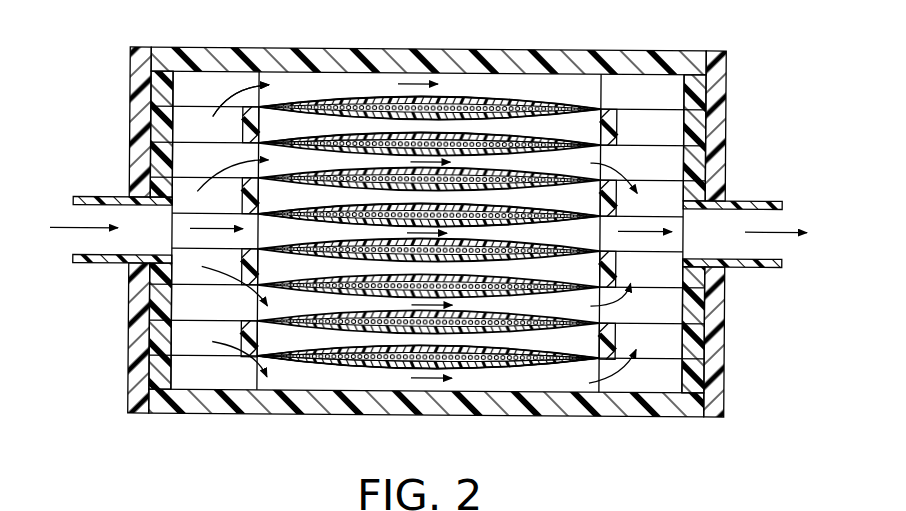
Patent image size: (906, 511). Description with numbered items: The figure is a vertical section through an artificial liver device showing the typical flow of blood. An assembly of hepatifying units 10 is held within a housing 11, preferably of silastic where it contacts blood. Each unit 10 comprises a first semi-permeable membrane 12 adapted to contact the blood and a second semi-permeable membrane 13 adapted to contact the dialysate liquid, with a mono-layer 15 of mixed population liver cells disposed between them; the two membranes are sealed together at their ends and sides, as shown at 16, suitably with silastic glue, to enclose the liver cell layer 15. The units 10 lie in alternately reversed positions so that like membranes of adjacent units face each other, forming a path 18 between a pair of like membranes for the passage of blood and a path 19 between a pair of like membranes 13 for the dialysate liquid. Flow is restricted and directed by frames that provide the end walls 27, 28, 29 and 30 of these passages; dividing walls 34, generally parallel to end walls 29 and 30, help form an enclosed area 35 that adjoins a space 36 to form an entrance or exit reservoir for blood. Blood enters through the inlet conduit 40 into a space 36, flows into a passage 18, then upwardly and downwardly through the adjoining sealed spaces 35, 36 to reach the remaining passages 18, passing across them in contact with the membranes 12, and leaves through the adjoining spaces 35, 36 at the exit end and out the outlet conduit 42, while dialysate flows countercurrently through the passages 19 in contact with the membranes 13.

The hepatifying unit 10 is at (513, 91).
The housing 11 is at (736, 60).
The first semi-permeable membrane 12 is at (589, 104).
The second semi-permeable membrane 13 is at (547, 126).
The mono-layer of liver cells 15 is at (298, 136).
The seal 16 is at (262, 104).
The blood passage 18 is at (553, 157).
The dialysate passage 19 is at (551, 199).
The end wall 27 is at (157, 99).
The end wall 28 is at (706, 92).
The end wall 29 is at (158, 121).
The end wall 30 is at (704, 131).
The dividing wall 34 is at (246, 110).
The enclosed area 35 is at (214, 143).
The space 36 is at (214, 106).
The inlet conduit 40 is at (90, 203).
The outlet conduit 42 is at (778, 201).